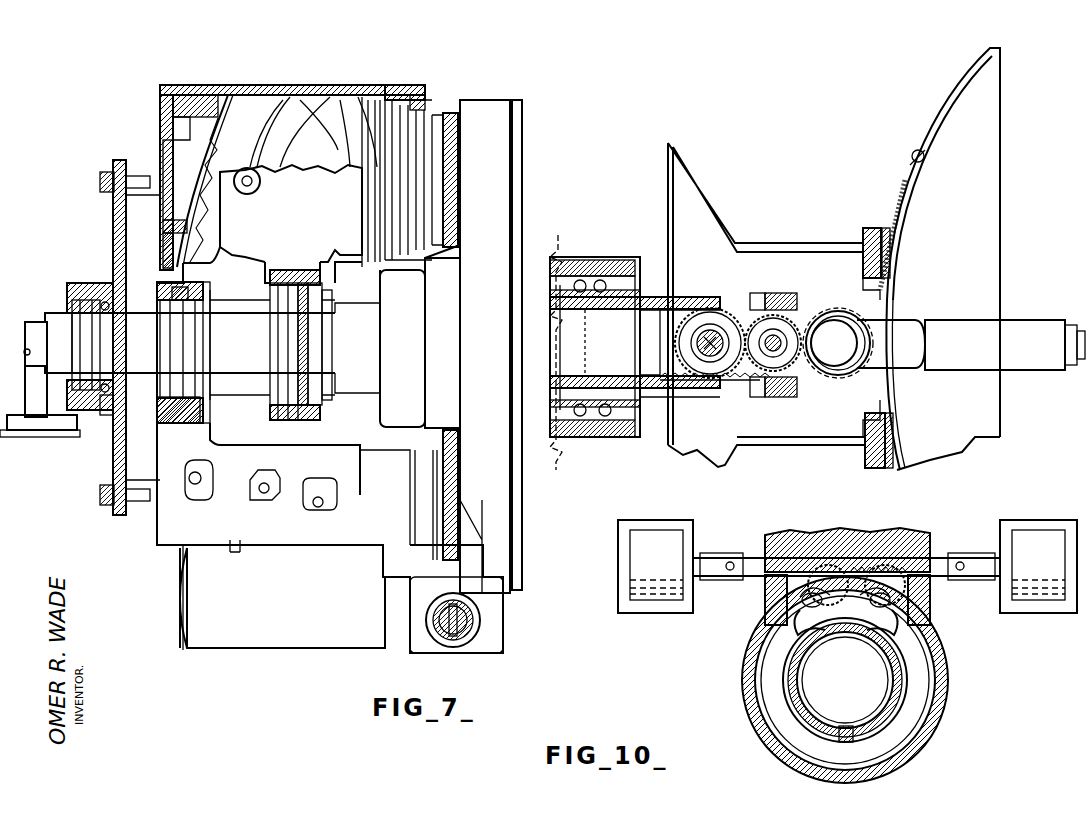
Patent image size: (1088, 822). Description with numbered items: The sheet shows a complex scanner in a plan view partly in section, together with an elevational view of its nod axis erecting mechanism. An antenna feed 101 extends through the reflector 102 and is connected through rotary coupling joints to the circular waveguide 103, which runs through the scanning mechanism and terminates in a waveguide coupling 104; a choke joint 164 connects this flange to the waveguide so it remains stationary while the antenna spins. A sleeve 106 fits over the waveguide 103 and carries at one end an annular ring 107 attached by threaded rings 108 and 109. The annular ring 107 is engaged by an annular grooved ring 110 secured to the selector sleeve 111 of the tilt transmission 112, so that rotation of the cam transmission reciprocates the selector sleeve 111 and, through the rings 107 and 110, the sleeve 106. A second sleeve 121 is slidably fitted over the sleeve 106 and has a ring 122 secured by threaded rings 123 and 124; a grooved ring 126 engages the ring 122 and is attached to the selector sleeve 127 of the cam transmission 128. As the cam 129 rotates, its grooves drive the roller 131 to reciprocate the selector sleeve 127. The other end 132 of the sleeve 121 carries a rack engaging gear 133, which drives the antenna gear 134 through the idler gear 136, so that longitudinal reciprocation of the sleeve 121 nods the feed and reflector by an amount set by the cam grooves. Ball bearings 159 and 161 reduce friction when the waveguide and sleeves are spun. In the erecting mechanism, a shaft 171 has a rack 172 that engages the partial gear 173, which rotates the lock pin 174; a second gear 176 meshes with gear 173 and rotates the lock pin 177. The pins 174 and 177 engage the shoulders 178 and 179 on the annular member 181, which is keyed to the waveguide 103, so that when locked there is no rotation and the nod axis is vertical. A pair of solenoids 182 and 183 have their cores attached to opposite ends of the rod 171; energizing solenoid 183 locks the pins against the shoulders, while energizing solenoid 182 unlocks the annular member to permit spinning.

In FIG. 7, the antenna feed 101 is at (1008, 332).
In FIG. 7, the reflector 102 is at (975, 118).
In FIG. 7, the circular waveguide 103 is at (613, 260).
In FIG. 10, the circular waveguide 103 is at (805, 708).
In FIG. 7, the waveguide coupling 104 is at (45, 422).
In FIG. 7, the sleeve 106 is at (672, 298).
In FIG. 7, the annular ring 107 is at (188, 318).
In FIG. 7, the threaded ring 108 is at (160, 338).
In FIG. 7, the threaded ring 109 is at (205, 343).
In FIG. 7, the annular grooved ring 110 is at (168, 423).
In FIG. 7, the selector sleeve 111 is at (200, 534).
In FIG. 7, the tilt transmission 112 is at (153, 548).
In FIG. 7, the second sleeve 121 is at (600, 420).
In FIG. 7, the ring 122 is at (315, 315).
In FIG. 7, the threaded ring 123 is at (318, 335).
In FIG. 7, the threaded ring 124 is at (277, 321).
In FIG. 7, the grooved ring 126 is at (300, 265).
In FIG. 7, the selector sleeve 127 is at (300, 207).
In FIG. 7, the cam transmission 128 is at (320, 82).
In FIG. 7, the cam 129 is at (246, 106).
In FIG. 7, the roller 131 is at (242, 170).
In FIG. 7, the other end of sleeve 132 is at (740, 388).
In FIG. 7, the gear 133 is at (727, 305).
In FIG. 7, the antenna gear 134 is at (833, 306).
In FIG. 7, the idler gear 136 is at (783, 310).
In FIG. 7, the ball bearing 159 is at (107, 415).
In FIG. 7, the ball bearing 161 is at (570, 440).
In FIG. 7, the choke joint 164 is at (70, 300).
In FIG. 10, the shaft 171 is at (752, 562).
In FIG. 10, the rack 172 is at (880, 563).
In FIG. 10, the partial gear 173 is at (905, 572).
In FIG. 10, the lock pin 174 is at (895, 598).
In FIG. 10, the second gear 176 is at (828, 580).
In FIG. 10, the lock pin 177 is at (800, 598).
In FIG. 10, the shoulder 178 is at (905, 617).
In FIG. 10, the shoulder 179 is at (790, 622).
In FIG. 10, the annular member 181 is at (770, 672).
In FIG. 10, the solenoid 182 is at (650, 540).
In FIG. 10, the solenoid 183 is at (1035, 538).